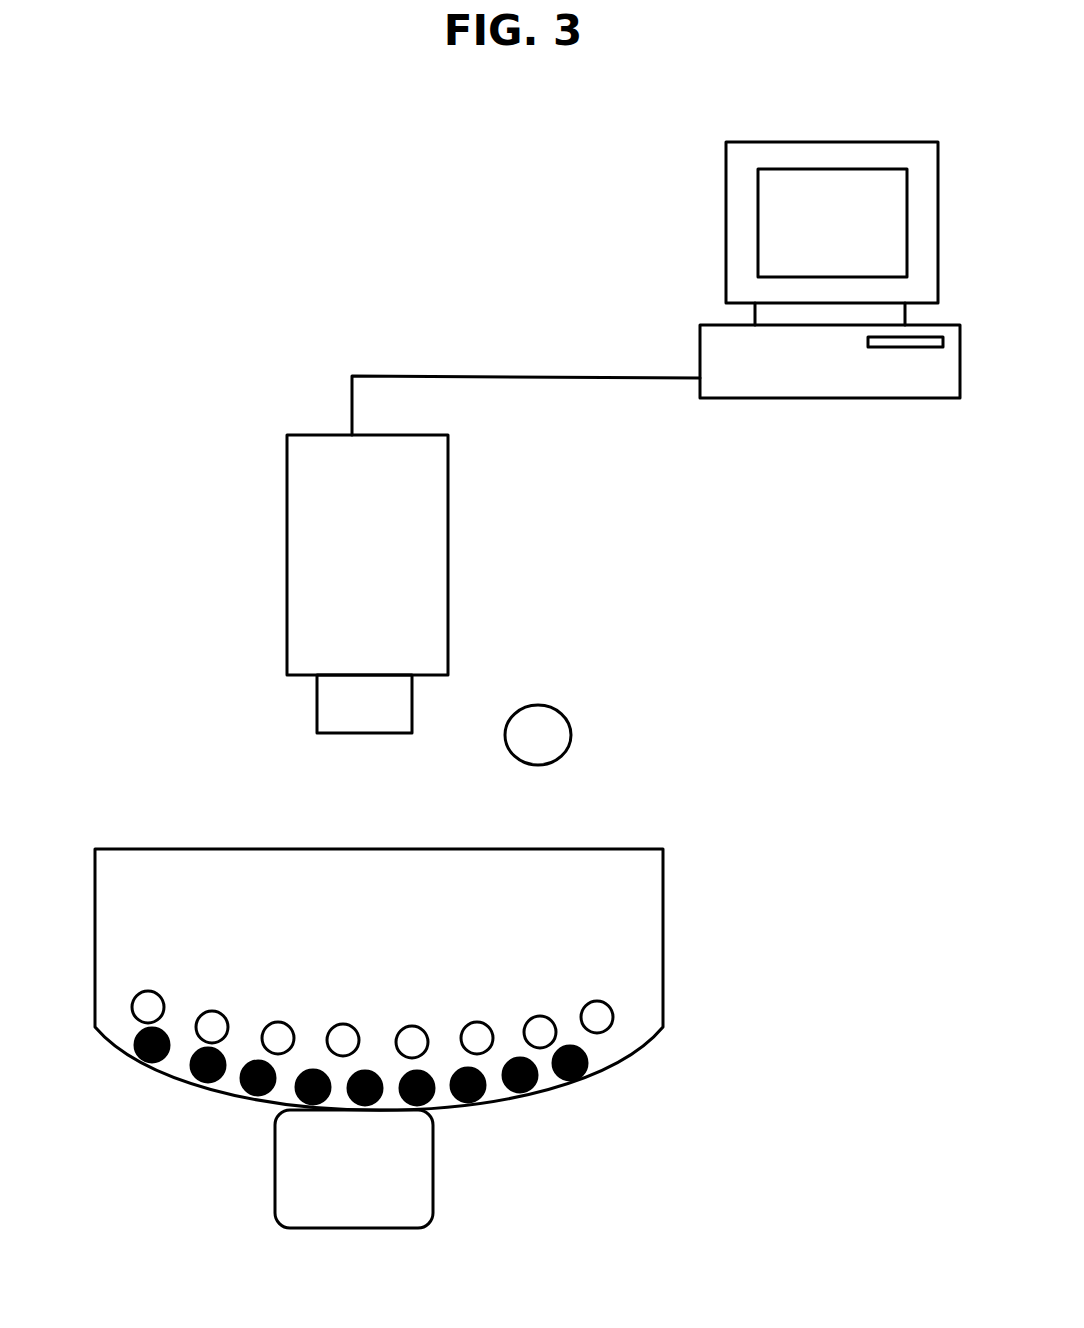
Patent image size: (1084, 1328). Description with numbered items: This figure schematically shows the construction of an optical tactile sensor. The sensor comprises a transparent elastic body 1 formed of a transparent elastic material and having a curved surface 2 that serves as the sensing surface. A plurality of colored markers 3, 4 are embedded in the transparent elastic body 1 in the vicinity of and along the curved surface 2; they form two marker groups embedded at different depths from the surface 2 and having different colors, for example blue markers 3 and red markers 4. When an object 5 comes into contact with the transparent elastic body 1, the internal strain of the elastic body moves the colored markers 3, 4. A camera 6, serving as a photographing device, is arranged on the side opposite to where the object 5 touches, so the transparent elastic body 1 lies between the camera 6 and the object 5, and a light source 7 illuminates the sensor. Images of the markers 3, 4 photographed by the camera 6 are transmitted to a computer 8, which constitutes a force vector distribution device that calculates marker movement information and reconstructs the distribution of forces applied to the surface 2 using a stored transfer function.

The transparent elastic body 1 is at (360, 955).
The curved surface 2 is at (379, 1003).
The colored markers 3 is at (583, 1077).
The colored markers 4 is at (612, 1010).
The object 5 is at (382, 1175).
The camera 6 is at (303, 578).
The light source 7 is at (566, 718).
The computer 8 is at (737, 181).